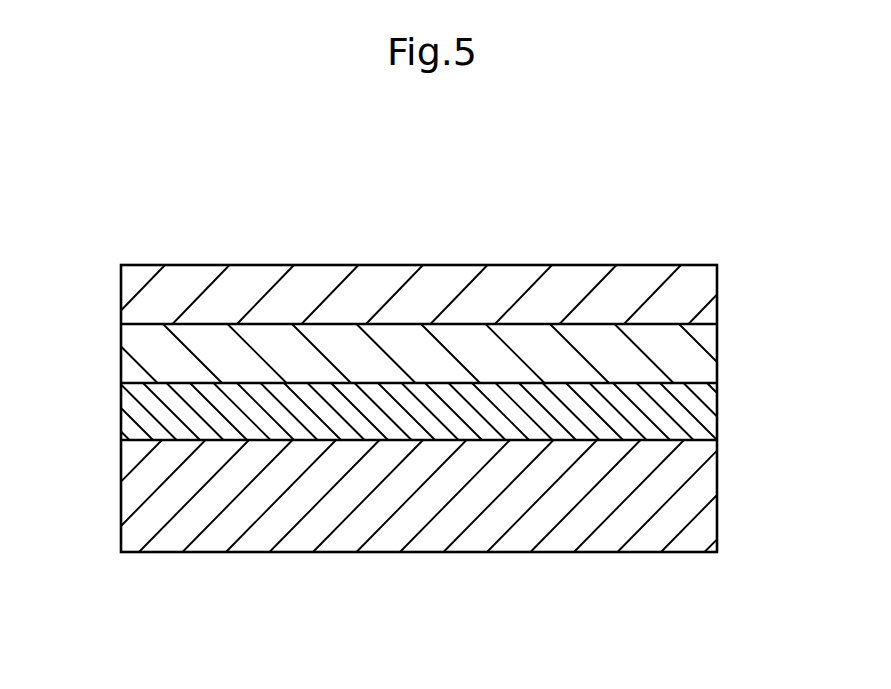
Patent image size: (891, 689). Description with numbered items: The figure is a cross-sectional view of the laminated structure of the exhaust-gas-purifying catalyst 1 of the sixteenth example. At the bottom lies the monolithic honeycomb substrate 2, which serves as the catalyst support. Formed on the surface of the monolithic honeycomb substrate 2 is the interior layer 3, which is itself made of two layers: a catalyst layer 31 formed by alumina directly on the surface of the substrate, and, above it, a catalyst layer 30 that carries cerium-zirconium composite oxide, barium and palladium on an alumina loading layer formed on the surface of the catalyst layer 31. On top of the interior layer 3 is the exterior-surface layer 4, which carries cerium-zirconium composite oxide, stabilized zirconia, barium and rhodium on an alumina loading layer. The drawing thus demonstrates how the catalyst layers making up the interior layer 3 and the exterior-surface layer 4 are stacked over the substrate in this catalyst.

The exhaust-gas-purifying catalyst 1 is at (263, 258).
The monolithic honeycomb substrate 2 is at (490, 537).
The interior layer 3 is at (505, 382).
The catalyst layer 30 is at (693, 345).
The catalyst layer 31 is at (475, 411).
The exterior-surface layer 4 is at (542, 275).